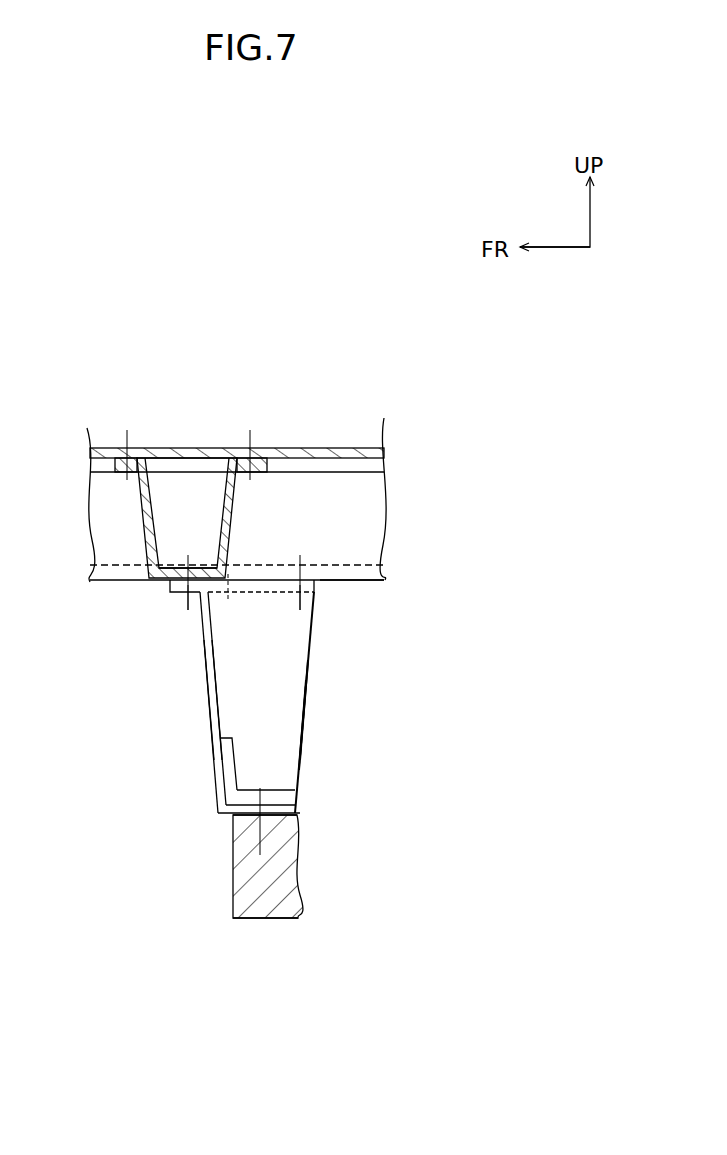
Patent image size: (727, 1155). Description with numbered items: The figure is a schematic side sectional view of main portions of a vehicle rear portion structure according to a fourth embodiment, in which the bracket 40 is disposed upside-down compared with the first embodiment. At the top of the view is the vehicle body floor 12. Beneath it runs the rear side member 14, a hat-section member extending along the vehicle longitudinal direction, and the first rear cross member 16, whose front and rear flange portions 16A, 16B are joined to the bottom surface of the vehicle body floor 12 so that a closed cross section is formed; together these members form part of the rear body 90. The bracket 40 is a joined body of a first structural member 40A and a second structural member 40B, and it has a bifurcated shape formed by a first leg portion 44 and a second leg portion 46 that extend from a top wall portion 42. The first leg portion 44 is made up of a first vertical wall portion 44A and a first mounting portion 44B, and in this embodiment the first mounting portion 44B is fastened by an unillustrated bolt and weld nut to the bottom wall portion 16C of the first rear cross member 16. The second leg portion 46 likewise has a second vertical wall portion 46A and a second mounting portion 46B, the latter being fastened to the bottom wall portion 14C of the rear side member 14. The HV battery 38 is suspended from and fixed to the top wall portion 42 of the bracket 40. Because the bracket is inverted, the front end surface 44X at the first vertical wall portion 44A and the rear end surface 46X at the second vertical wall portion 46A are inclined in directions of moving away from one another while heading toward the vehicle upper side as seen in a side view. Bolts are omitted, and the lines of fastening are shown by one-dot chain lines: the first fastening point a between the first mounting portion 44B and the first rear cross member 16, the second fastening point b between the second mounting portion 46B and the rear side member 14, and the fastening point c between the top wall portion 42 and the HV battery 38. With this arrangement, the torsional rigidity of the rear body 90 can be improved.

The rear body 90 is at (370, 412).
The vehicle body floor 12 is at (305, 446).
The rear side member 14 is at (363, 584).
The bottom wall portion of the rear side member 14C is at (342, 582).
The first rear cross member 16 is at (125, 523).
The front flange portion of the first rear cross member 16A is at (130, 472).
The rear flange portion of the first rear cross member 16B is at (267, 472).
The bottom wall portion of the first rear cross member 16C is at (180, 566).
The HV battery 38 is at (272, 918).
The bracket 40 is at (115, 733).
The first structural member 40A is at (210, 722).
The second structural member 40B is at (284, 789).
The top wall portion 42 is at (276, 823).
The first leg portion 44 is at (187, 730).
The first vertical wall portion 44A is at (220, 680).
The first mounting portion 44B is at (173, 597).
The front end surface 44X is at (208, 690).
The second leg portion 46 is at (294, 673).
The second vertical wall portion 46A is at (286, 710).
The second mounting portion 46B is at (278, 591).
The rear end surface 46X is at (301, 742).
The first fastening point a is at (176, 608).
The second fastening point b is at (314, 600).
The fastening point c is at (251, 823).